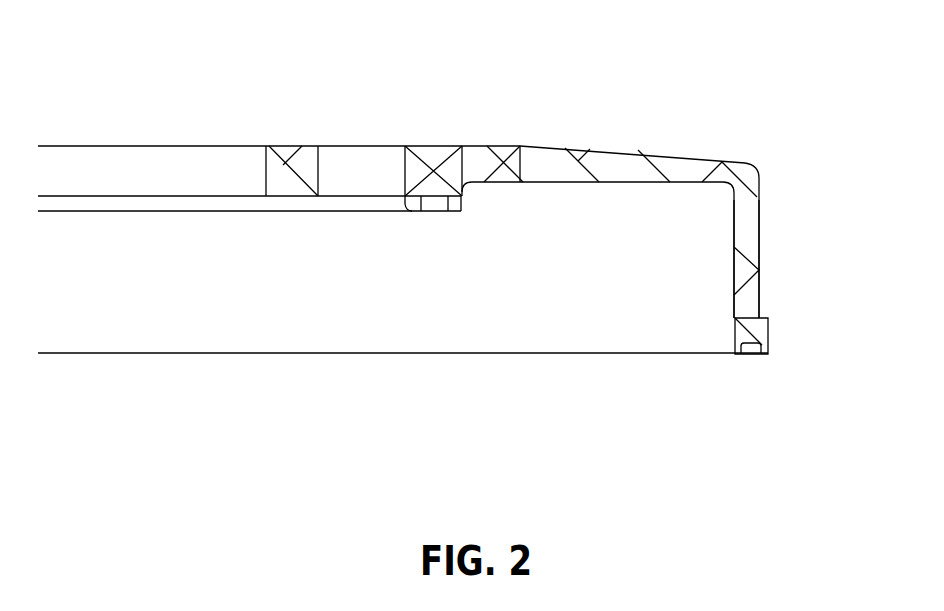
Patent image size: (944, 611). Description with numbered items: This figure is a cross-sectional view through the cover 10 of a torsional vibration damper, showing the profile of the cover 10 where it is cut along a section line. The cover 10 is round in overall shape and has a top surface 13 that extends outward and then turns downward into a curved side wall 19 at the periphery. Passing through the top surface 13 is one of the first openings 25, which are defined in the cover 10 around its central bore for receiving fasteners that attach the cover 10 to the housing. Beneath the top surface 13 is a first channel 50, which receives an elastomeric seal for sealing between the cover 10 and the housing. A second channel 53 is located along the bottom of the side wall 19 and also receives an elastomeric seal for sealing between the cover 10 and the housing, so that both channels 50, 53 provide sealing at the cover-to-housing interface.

The cover 10 is at (180, 162).
The top surface 13 is at (594, 148).
The curved side wall 19 is at (759, 247).
The first openings 25 is at (401, 168).
The first channel 50 is at (448, 198).
The second channel 53 is at (757, 348).